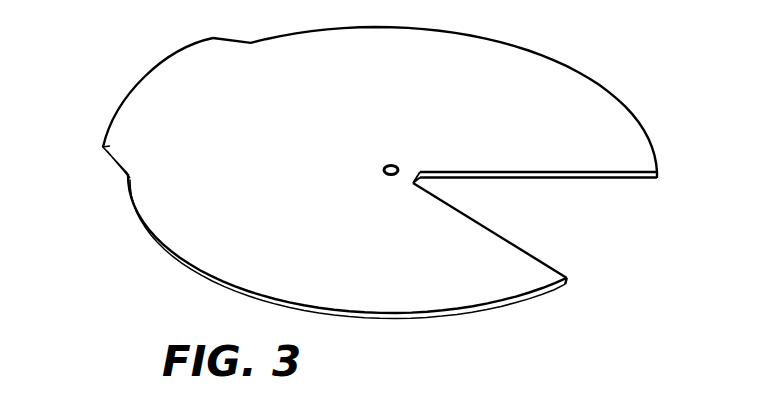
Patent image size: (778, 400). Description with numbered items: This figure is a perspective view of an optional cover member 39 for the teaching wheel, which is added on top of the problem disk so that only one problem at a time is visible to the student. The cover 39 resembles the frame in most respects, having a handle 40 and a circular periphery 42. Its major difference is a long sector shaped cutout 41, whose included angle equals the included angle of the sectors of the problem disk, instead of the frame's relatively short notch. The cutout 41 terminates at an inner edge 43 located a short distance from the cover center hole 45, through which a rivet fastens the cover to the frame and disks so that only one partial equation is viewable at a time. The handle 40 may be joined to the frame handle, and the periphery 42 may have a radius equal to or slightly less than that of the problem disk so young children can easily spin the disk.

The cover member 39 is at (361, 161).
The handle 40 is at (104, 147).
The sector shaped cutout 41 is at (550, 207).
The circular periphery 42 is at (442, 30).
The inner edge 43 is at (421, 183).
The cover center hole 45 is at (385, 165).